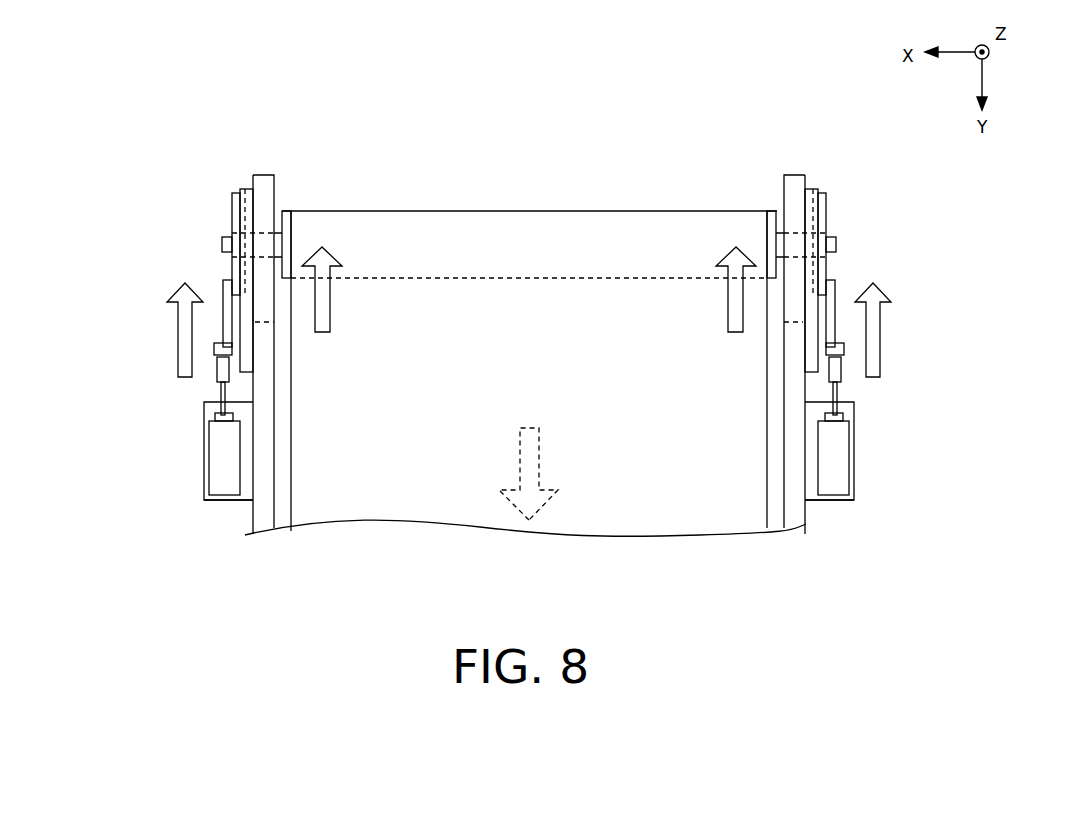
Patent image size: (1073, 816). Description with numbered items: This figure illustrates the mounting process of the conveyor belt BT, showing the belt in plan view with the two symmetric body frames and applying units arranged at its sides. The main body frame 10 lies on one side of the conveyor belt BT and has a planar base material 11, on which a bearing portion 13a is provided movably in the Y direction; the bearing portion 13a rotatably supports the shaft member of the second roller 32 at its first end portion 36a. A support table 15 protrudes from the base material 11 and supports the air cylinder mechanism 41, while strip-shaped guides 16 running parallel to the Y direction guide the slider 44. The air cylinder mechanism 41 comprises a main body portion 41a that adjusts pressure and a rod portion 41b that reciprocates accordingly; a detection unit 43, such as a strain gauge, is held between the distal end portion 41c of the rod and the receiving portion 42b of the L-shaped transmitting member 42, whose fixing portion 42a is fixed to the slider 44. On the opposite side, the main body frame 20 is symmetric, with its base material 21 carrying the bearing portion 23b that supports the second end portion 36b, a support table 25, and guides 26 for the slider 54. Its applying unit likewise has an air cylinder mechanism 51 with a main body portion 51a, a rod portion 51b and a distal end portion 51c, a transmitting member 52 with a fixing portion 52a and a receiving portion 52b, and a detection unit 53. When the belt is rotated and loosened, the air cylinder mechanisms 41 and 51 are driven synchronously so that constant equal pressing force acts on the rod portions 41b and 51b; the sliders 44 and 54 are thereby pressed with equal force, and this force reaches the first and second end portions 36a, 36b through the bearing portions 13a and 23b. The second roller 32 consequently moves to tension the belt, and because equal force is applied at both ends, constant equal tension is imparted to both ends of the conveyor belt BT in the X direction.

The main body frame 10 is at (806, 516).
The base material 11 is at (794, 175).
The bearing portion 13a is at (778, 233).
The support table 15 is at (810, 496).
The guides 16 is at (808, 188).
The main body frame 20 is at (252, 520).
The base material 21 is at (262, 175).
The bearing portion 23b is at (279, 234).
The support table 25 is at (248, 496).
The guides 26 is at (251, 189).
The second roller 32 is at (770, 211).
The first end portion 36a is at (836, 245).
The second end portion 36b is at (222, 245).
The air cylinder mechanism 41 is at (907, 441).
The main body portion 41a is at (841, 462).
The rod portion 41b is at (846, 397).
The distal end portion 41c is at (836, 392).
The transmitting member 42 is at (918, 320).
The fixing portion 42a is at (832, 320).
The receiving portion 42b is at (842, 350).
The detection unit 43 is at (838, 370).
The slider 44 is at (822, 193).
The air cylinder mechanism 51 is at (154, 442).
The main body portion 51a is at (217, 462).
The rod portion 51b is at (212, 397).
The distal end portion 51c is at (222, 392).
The transmitting member 52 is at (143, 321).
The fixing portion 52a is at (226, 320).
The receiving portion 52b is at (216, 350).
The detection unit 53 is at (222, 370).
The slider 54 is at (237, 193).
The conveyor belt BT is at (658, 512).